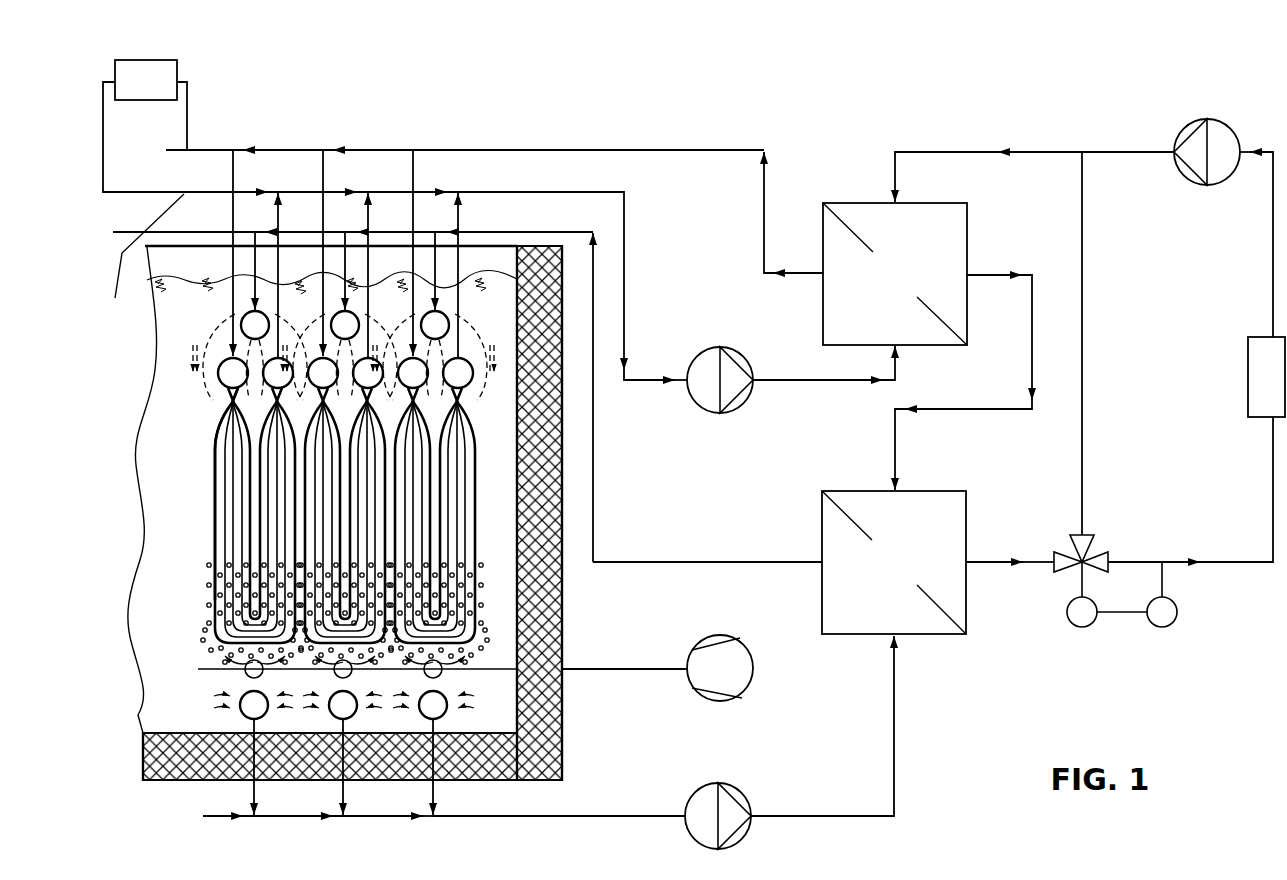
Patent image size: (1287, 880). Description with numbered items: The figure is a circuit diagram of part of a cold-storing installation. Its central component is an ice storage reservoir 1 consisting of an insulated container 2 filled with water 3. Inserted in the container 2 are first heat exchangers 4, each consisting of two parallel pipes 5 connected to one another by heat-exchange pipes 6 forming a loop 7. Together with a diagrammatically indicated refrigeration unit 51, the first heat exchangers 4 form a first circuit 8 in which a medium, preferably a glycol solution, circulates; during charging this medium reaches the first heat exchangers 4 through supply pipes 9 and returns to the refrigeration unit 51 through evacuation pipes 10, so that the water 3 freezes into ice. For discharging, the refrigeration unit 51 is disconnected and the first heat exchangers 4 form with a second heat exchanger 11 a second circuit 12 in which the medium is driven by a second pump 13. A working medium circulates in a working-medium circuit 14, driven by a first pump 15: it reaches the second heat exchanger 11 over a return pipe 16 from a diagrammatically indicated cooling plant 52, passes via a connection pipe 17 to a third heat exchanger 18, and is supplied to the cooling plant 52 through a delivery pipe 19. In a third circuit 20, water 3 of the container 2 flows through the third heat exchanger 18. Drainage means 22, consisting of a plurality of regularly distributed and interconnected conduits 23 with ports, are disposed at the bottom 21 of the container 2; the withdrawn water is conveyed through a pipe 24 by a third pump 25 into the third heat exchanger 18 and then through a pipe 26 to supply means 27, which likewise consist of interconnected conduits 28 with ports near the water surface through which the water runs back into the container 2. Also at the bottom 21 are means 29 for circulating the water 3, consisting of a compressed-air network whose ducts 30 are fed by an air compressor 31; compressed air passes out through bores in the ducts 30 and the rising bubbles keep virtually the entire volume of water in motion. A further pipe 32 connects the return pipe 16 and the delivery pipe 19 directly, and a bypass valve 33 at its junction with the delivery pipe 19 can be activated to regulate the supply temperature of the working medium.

The ice storage reservoir 1 is at (171, 785).
The insulated container 2 is at (465, 760).
The water 3 is at (176, 619).
The first heat exchangers 4 is at (401, 526).
The parallel pipes 5 is at (270, 375).
The heat-exchange pipes 6 is at (227, 515).
The loop 7 is at (211, 527).
The first circuit 8 is at (152, 188).
The supply pipes 9 is at (235, 190).
The evacuation pipes 10 is at (278, 288).
The second heat exchanger 11 is at (857, 213).
The second circuit 12 is at (700, 148).
The second pump 13 is at (710, 358).
The working-medium circuit 14 is at (1151, 147).
The first pump 15 is at (1224, 163).
The return pipe 16 is at (1017, 148).
The connection pipe 17 is at (957, 410).
The third heat exchanger 18 is at (918, 635).
The delivery pipe 19 is at (1183, 562).
The third circuit 20 is at (831, 819).
The bottom 21 is at (497, 712).
The drainage means 22 is at (305, 819).
The conduits 23 is at (255, 700).
The pipe 24 is at (545, 815).
The third pump 25 is at (700, 828).
The pipe 26 is at (722, 556).
The supply means 27 is at (506, 230).
The conduits 28 is at (437, 328).
The circulating means 29 is at (629, 667).
The ducts 30 is at (436, 673).
The air compressor 31 is at (735, 685).
The further pipe 32 is at (1084, 368).
The bypass valve 33 is at (1121, 617).
The refrigeration unit 51 is at (172, 70).
The cooling plant 52 is at (1253, 375).